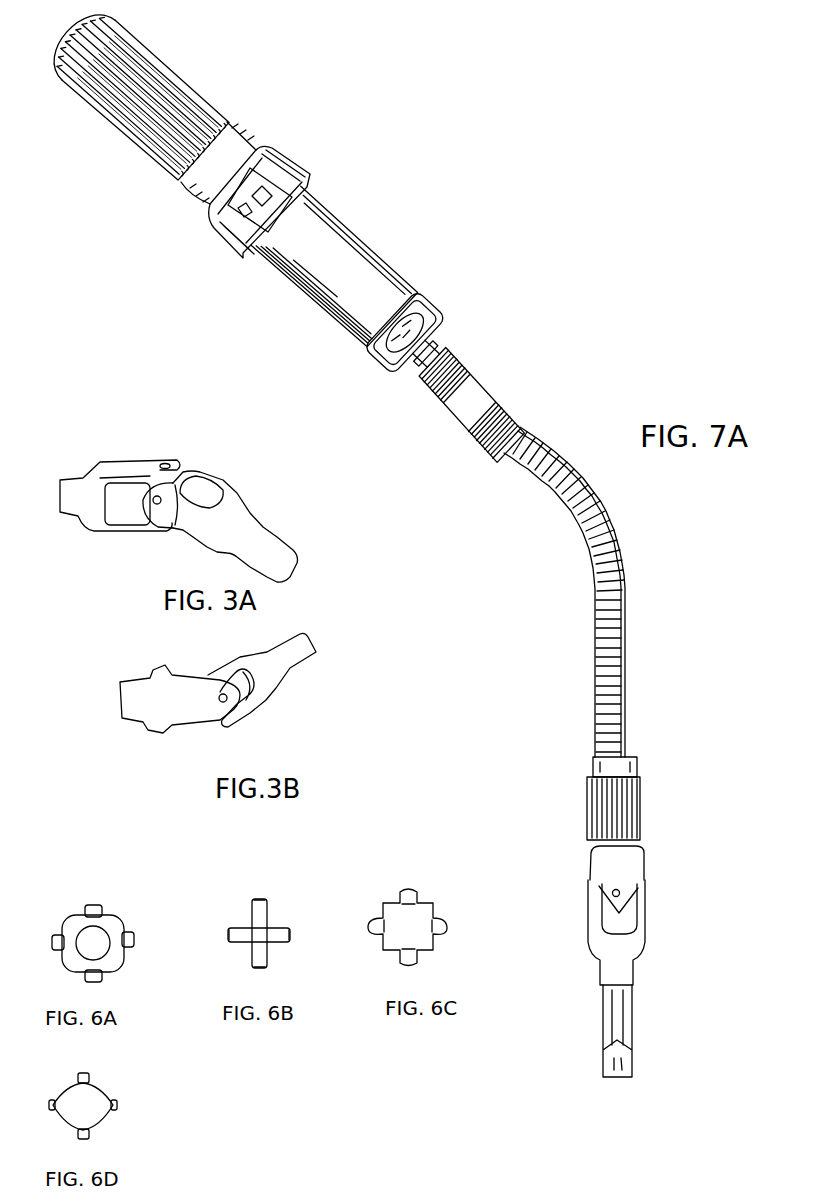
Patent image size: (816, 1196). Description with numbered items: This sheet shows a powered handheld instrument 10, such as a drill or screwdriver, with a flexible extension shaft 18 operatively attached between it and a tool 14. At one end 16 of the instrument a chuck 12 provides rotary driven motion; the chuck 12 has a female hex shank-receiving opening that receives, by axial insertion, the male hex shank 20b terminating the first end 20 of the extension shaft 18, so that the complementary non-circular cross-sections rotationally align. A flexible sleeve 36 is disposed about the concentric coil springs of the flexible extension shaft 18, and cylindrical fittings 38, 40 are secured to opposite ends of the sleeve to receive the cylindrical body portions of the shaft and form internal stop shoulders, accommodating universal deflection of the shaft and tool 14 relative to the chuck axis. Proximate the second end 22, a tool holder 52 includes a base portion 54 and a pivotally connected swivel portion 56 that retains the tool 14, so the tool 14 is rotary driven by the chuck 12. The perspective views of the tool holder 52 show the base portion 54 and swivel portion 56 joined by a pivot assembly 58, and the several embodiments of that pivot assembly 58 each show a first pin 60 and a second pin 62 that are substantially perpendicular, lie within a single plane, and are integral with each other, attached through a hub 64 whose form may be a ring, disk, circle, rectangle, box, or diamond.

In FIG. 7A, the handheld instrument 10 is at (372, 206).
In FIG. 7A, the chuck 12 is at (452, 348).
In FIG. 7A, the tool 14 is at (637, 1030).
In FIG. 7A, the end 16 is at (442, 303).
In FIG. 7A, the extension shaft 18 is at (628, 565).
In FIG. 7A, the first end 20 is at (470, 368).
In FIG. 7A, the male hex shank 20b is at (438, 383).
In FIG. 7A, the second end 22 is at (641, 822).
In FIG. 7A, the flexible sleeve 36 is at (632, 692).
In FIG. 7A, the cylindrical fitting 38 is at (490, 387).
In FIG. 7A, the cylindrical fitting 40 is at (641, 787).
In FIG. 7A, the tool holder 52 is at (656, 961).
In FIG. 3A, the tool holder 52 is at (204, 494).
In FIG. 3B, the tool holder 52 is at (227, 698).
In FIG. 7A, the base portion 54 is at (634, 871).
In FIG. 3A, the base portion 54 is at (100, 461).
In FIG. 3B, the base portion 54 is at (135, 727).
In FIG. 7A, the swivel portion 56 is at (625, 932).
In FIG. 3A, the swivel portion 56 is at (228, 518).
In FIG. 3B, the swivel portion 56 is at (292, 679).
In FIG. 6A, the pivot assembly 58 is at (96, 929).
In FIG. 6B, the pivot assembly 58 is at (265, 919).
In FIG. 6C, the pivot assembly 58 is at (416, 910).
In FIG. 6D, the pivot assembly 58 is at (96, 1097).
In FIG. 7A, the first pin 60 is at (620, 890).
In FIG. 3A, the first pin 60 is at (193, 490).
In FIG. 6A, the first pin 60 is at (55, 936).
In FIG. 6B, the first pin 60 is at (232, 928).
In FIG. 6C, the first pin 60 is at (370, 917).
In FIG. 6D, the first pin 60 is at (53, 1102).
In FIG. 7A, the second pin 62 is at (640, 908).
In FIG. 3A, the second pin 62 is at (135, 527).
In FIG. 6A, the second pin 62 is at (92, 904).
In FIG. 6B, the second pin 62 is at (262, 897).
In FIG. 6C, the second pin 62 is at (410, 890).
In FIG. 6D, the second pin 62 is at (82, 1074).
In FIG. 6A, the hub 64 is at (70, 966).
In FIG. 6B, the hub 64 is at (250, 946).
In FIG. 6C, the hub 64 is at (424, 934).
In FIG. 6D, the hub 64 is at (95, 1113).